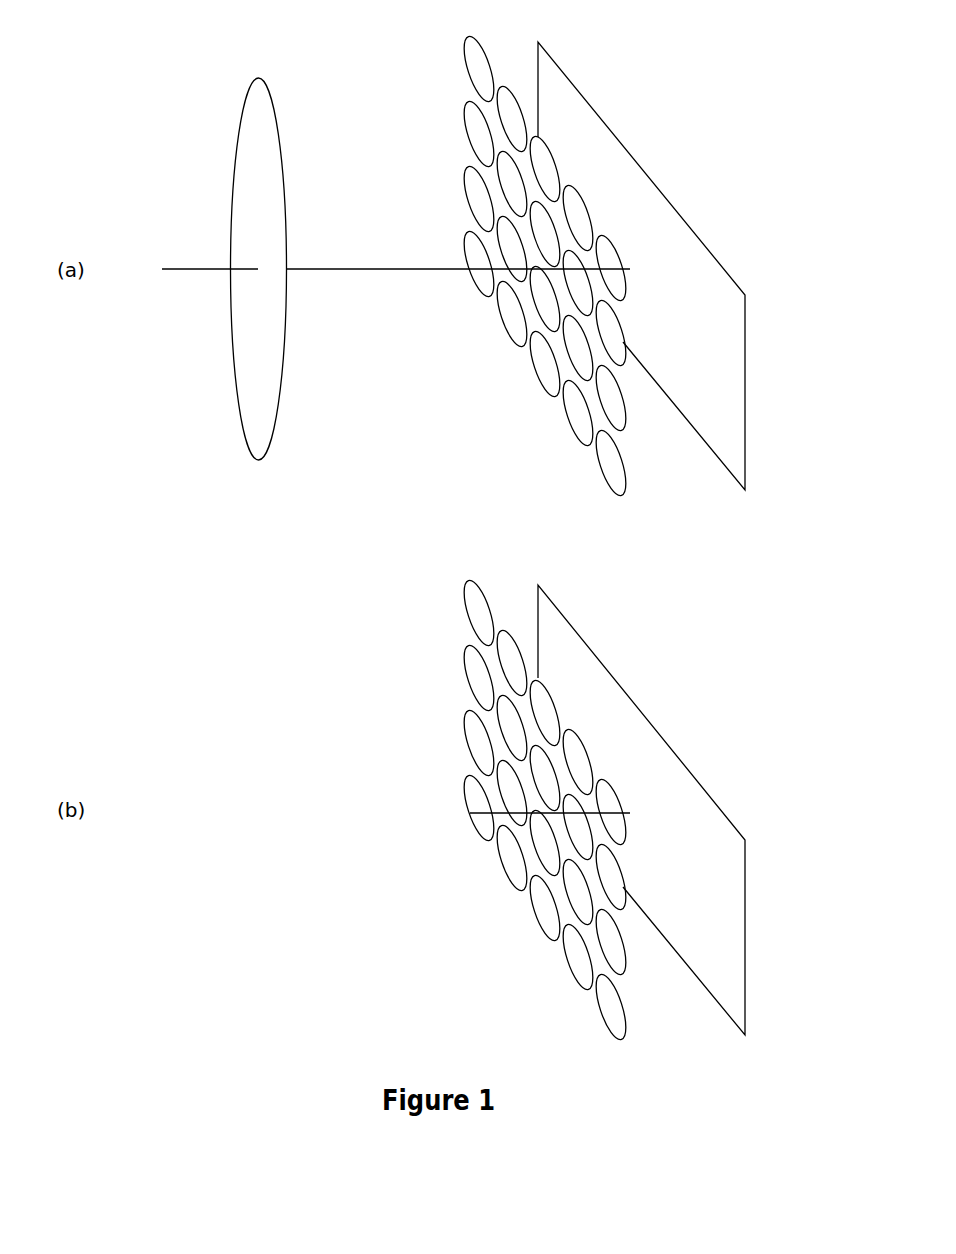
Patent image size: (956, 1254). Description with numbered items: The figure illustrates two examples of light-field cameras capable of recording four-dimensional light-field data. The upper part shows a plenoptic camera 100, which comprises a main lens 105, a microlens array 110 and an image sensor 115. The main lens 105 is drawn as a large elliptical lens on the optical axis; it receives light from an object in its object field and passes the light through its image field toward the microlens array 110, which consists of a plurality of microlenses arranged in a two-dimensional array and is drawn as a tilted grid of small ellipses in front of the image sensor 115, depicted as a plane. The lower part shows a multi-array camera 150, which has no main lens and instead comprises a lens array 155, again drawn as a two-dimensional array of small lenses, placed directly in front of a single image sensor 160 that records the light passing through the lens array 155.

The plenoptic camera 100 is at (793, 175).
The main lens 105 is at (278, 130).
The microlens array 110 is at (557, 400).
The image sensor 115 is at (610, 128).
The multi-array camera 150 is at (813, 660).
The lens array 155 is at (555, 943).
The single image sensor 160 is at (612, 670).